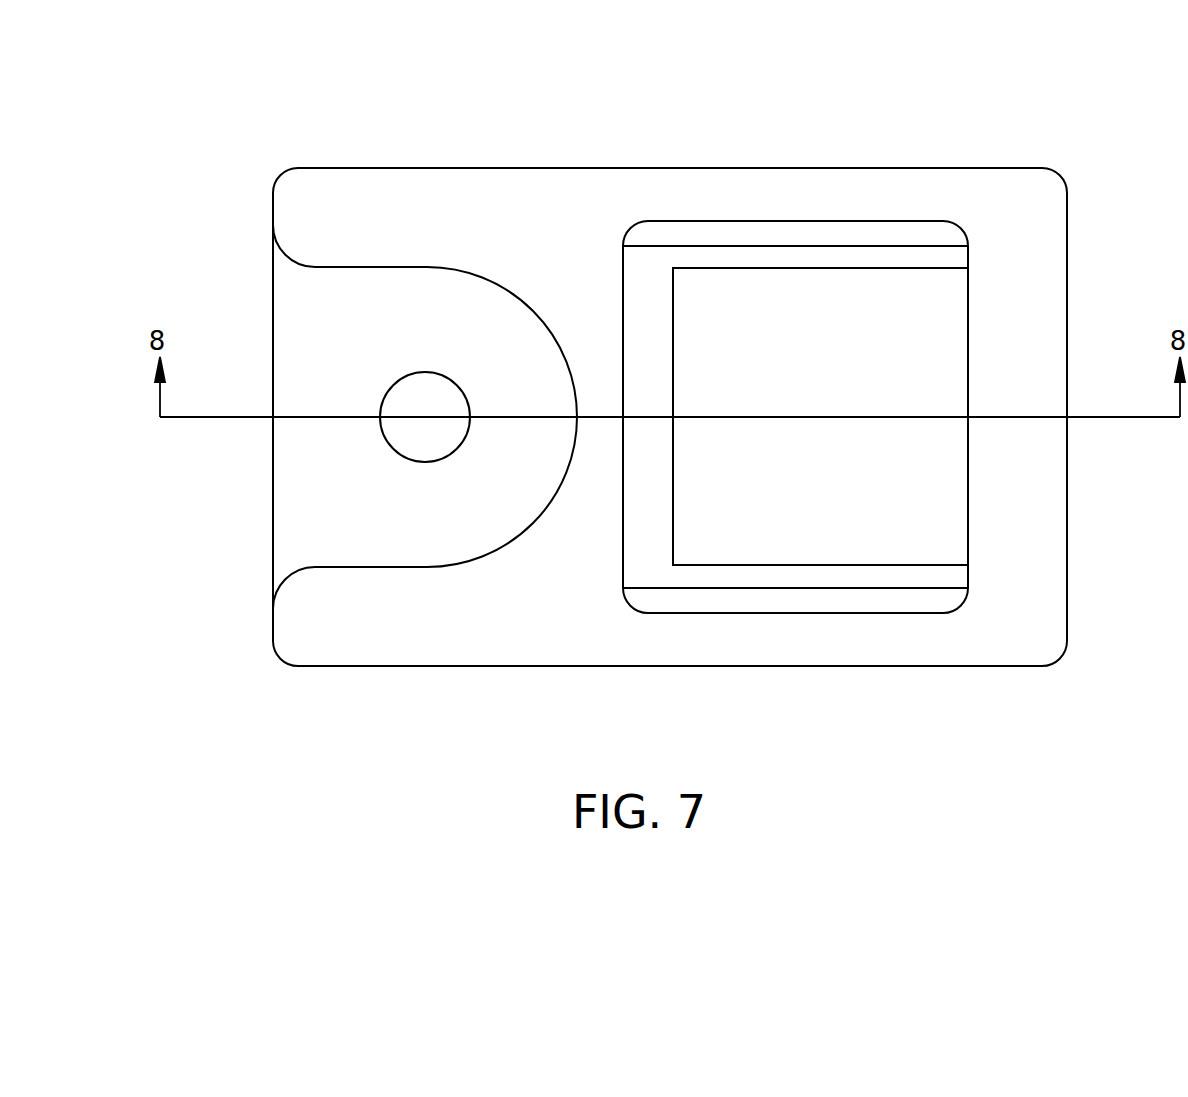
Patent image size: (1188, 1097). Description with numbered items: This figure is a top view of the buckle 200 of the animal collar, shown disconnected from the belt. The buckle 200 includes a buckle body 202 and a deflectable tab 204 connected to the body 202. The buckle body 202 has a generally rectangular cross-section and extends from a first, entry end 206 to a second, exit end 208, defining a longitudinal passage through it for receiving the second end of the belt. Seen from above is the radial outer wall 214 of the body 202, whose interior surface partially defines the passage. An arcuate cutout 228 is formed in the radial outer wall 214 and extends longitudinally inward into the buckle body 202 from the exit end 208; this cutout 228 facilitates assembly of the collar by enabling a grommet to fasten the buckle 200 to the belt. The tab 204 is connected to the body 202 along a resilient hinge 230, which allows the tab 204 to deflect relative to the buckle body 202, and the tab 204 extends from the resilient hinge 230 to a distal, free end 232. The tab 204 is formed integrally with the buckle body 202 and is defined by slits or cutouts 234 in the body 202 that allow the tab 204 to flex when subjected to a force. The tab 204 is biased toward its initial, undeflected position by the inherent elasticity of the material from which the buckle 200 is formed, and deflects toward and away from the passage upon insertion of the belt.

The buckle 200 is at (1082, 116).
The buckle body 202 is at (955, 178).
The deflectable tab 204 is at (767, 332).
The entry end 206 is at (1067, 600).
The exit end 208 is at (270, 637).
The radial outer wall 214 is at (494, 626).
The arcuate cutout 228 is at (427, 267).
The resilient hinge 230 is at (968, 475).
The free end 232 is at (672, 542).
The slits or cutouts 234 is at (642, 337).